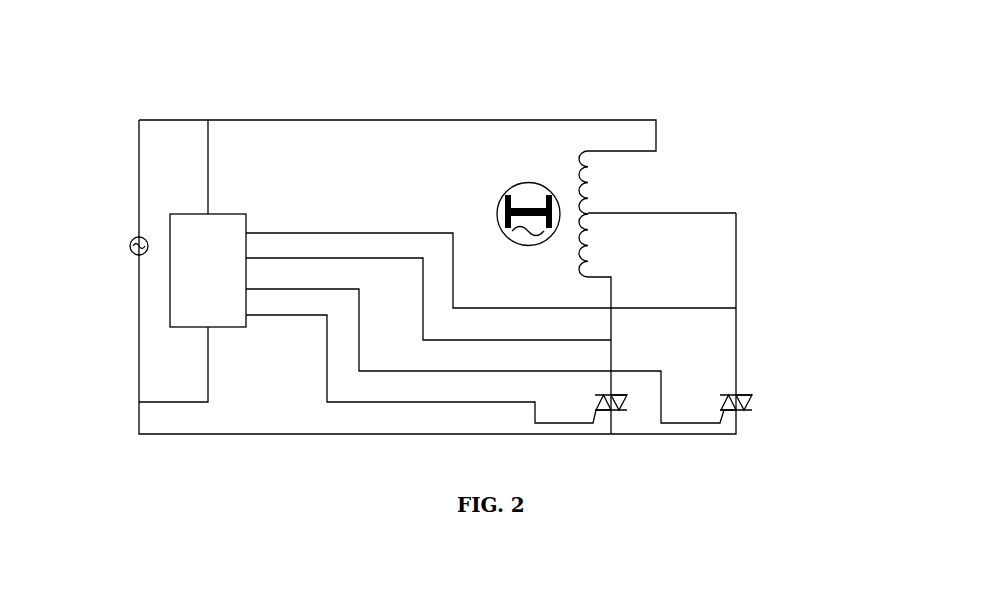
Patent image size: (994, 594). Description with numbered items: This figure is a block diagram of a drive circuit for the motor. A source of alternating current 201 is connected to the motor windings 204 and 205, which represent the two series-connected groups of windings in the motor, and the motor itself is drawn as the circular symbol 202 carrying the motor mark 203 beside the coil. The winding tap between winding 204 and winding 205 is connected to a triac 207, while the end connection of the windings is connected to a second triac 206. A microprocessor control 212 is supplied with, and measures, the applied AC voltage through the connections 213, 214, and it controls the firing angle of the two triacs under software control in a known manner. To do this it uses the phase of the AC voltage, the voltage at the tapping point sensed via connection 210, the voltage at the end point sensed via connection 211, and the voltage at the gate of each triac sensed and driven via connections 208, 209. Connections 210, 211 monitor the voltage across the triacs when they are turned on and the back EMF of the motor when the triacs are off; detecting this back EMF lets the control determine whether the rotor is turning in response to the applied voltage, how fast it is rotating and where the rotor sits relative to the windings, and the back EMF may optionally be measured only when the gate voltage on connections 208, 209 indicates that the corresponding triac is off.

The source of alternating current 201 is at (128, 232).
The motor 202 is at (527, 172).
The motor symbol / sensor 203 is at (508, 185).
The winding 204 is at (610, 183).
The winding 205 is at (597, 258).
The triac 206 is at (629, 389).
The triac 207 is at (767, 402).
The connection 208 is at (403, 408).
The connection 209 is at (464, 371).
The connection 210 is at (327, 227).
The connection 211 is at (389, 252).
The microprocessor control 212 is at (192, 227).
The connection 213 is at (213, 150).
The connection 214 is at (198, 400).